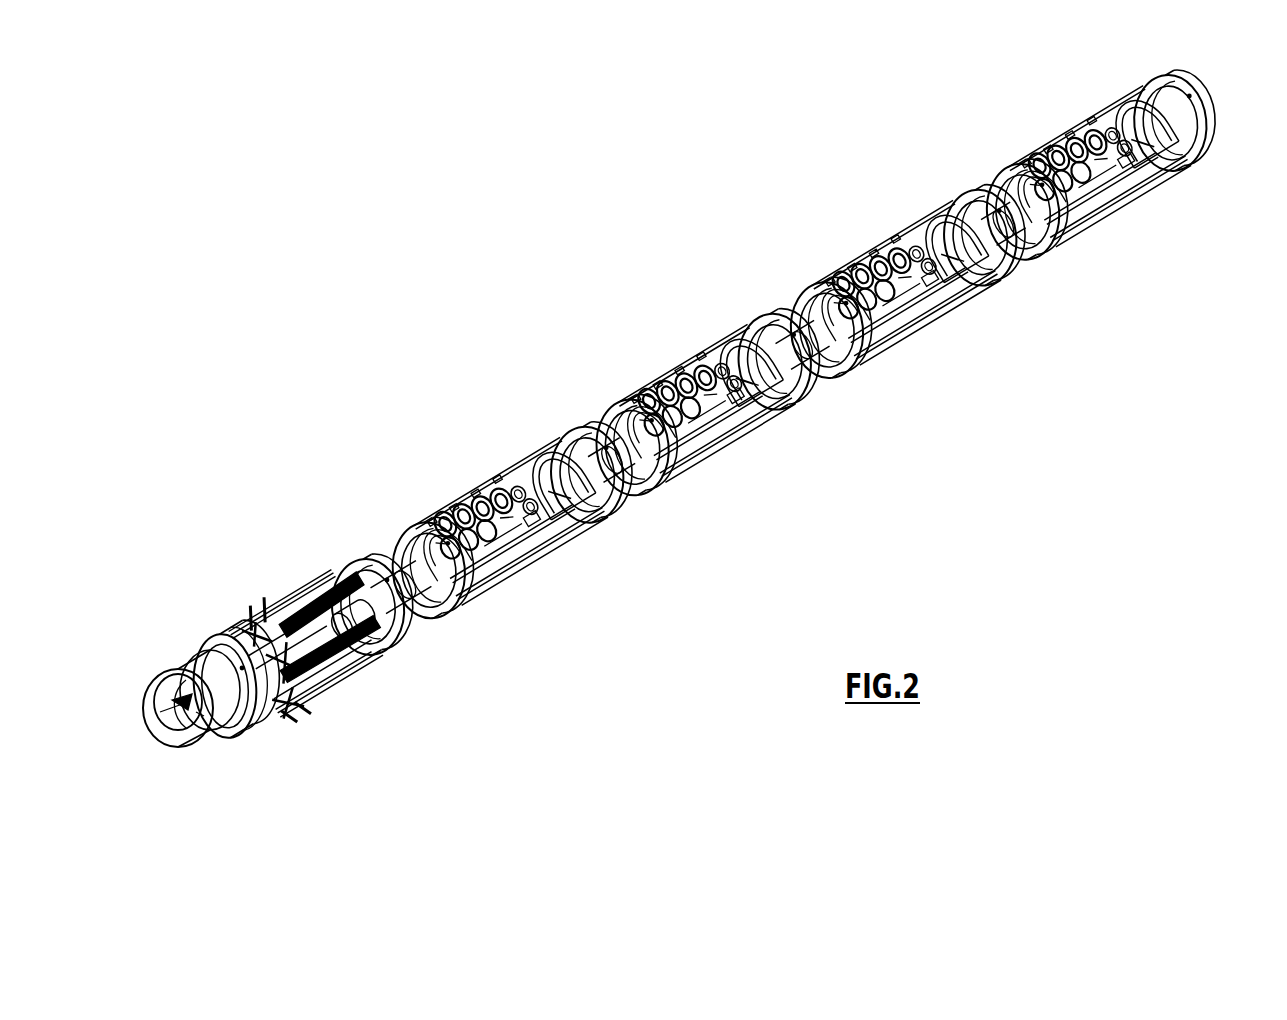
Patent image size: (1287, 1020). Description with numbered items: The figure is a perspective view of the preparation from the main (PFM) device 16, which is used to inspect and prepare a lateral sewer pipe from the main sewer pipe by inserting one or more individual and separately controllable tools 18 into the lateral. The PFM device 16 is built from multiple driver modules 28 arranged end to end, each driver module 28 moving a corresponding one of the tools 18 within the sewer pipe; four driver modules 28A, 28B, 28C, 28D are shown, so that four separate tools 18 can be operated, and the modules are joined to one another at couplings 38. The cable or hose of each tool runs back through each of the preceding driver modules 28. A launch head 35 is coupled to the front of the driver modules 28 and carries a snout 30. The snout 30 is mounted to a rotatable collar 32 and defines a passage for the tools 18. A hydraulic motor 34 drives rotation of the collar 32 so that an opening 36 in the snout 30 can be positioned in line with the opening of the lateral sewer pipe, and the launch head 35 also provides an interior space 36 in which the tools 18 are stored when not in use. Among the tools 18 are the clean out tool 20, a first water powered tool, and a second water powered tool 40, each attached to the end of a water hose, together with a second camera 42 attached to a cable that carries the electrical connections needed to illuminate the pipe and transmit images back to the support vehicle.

The preparation from the main (PFM) device 16 is at (340, 378).
The tools 18 is at (318, 684).
The clean out tool 20 is at (365, 608).
The driver modules 28 is at (803, 347).
The first driver module 28A is at (548, 540).
The second driver module 28B is at (742, 418).
The third driver module 28C is at (925, 310).
The fourth driver module 28D is at (1100, 164).
The snout 30 is at (163, 672).
The rotatable collar 32 is at (213, 648).
The hydraulic motor 34 is at (277, 703).
The launch head 35 is at (403, 742).
The opening / interior space 36 is at (330, 676).
The module couplings 38 is at (418, 626).
The second water powered tool 40 is at (322, 581).
The second camera 42 is at (277, 600).